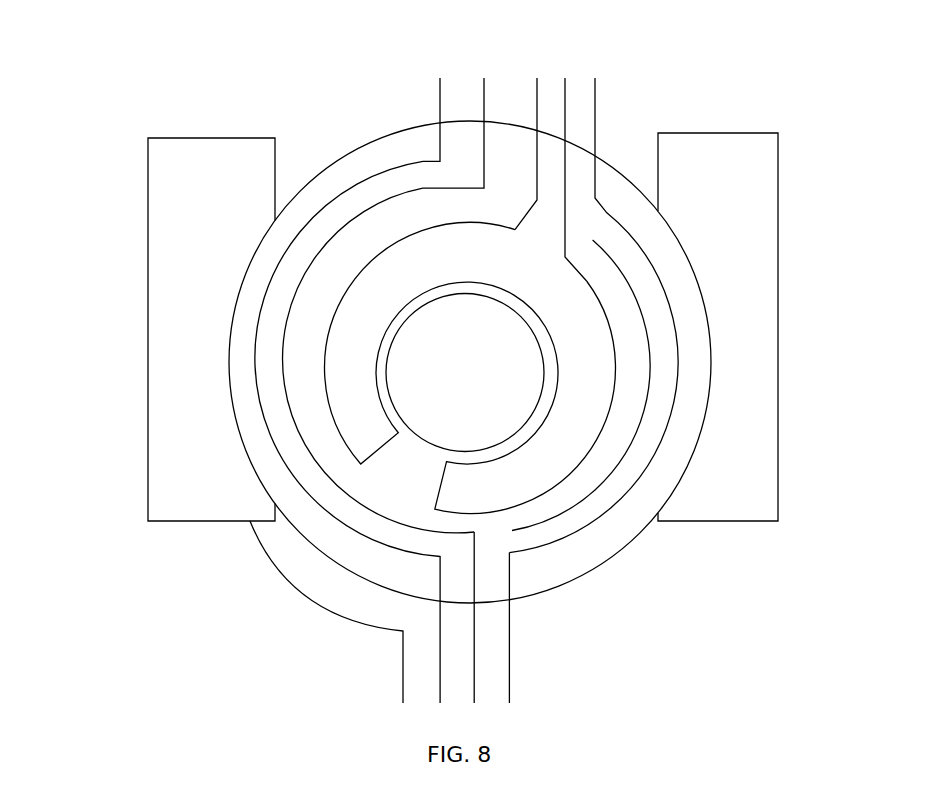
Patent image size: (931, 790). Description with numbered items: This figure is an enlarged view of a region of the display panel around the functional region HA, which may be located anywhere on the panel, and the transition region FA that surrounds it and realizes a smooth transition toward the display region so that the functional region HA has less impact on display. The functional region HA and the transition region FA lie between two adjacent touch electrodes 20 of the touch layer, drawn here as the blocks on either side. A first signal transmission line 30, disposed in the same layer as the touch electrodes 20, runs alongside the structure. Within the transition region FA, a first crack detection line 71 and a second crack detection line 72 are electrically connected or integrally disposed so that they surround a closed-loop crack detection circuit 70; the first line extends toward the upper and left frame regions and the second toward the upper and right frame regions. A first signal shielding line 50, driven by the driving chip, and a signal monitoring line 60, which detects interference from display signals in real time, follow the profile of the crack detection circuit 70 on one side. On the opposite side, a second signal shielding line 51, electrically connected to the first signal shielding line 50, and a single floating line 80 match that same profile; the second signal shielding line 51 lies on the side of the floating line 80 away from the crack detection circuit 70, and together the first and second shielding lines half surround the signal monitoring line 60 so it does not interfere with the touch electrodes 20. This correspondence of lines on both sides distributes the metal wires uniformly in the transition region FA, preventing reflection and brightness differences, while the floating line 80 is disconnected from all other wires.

The touch electrode 20 is at (204, 212).
The first signal transmission line 30 is at (277, 578).
The first signal shielding line 50 is at (353, 186).
The second signal shielding line 51 is at (661, 266).
The signal monitoring line 60 is at (420, 188).
The crack detection circuit 70 is at (583, 455).
The first crack detection line 71 is at (529, 117).
The second crack detection line 72 is at (568, 117).
The floating line 80 is at (652, 341).
The functional region HA is at (500, 375).
The transition region FA is at (493, 560).